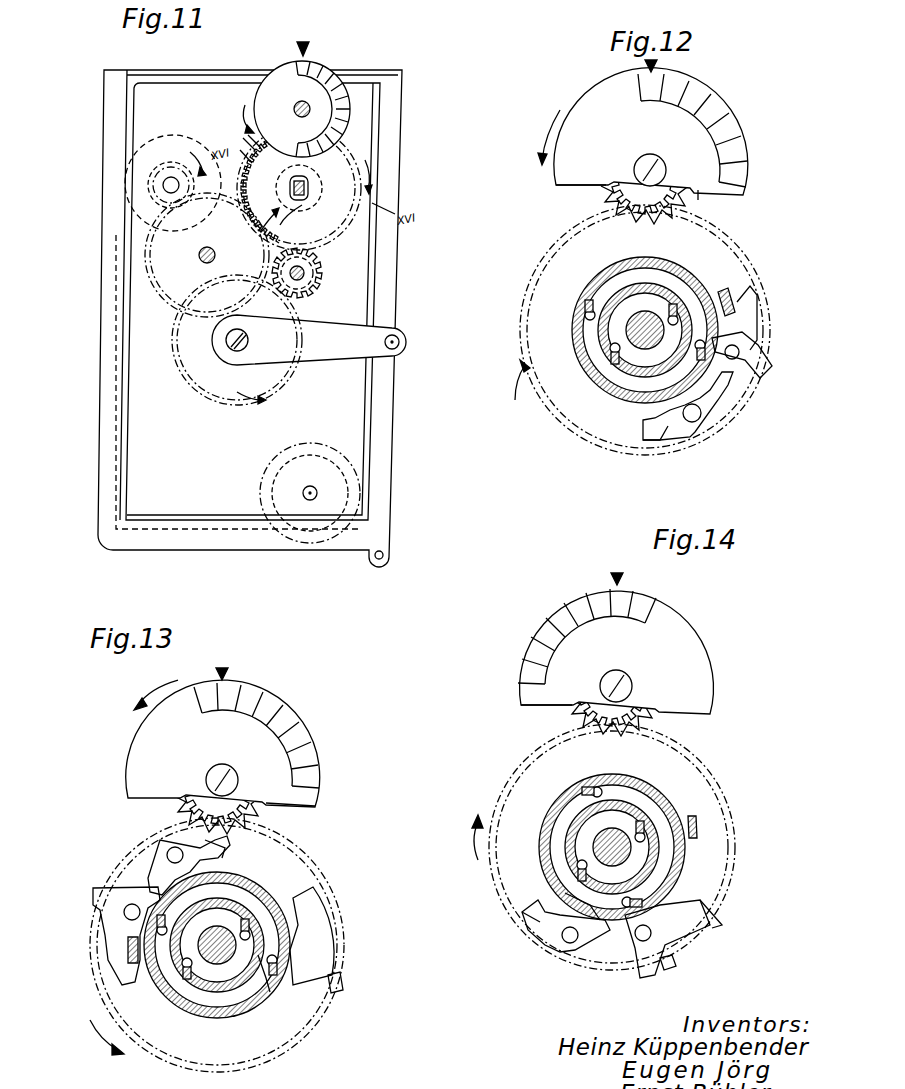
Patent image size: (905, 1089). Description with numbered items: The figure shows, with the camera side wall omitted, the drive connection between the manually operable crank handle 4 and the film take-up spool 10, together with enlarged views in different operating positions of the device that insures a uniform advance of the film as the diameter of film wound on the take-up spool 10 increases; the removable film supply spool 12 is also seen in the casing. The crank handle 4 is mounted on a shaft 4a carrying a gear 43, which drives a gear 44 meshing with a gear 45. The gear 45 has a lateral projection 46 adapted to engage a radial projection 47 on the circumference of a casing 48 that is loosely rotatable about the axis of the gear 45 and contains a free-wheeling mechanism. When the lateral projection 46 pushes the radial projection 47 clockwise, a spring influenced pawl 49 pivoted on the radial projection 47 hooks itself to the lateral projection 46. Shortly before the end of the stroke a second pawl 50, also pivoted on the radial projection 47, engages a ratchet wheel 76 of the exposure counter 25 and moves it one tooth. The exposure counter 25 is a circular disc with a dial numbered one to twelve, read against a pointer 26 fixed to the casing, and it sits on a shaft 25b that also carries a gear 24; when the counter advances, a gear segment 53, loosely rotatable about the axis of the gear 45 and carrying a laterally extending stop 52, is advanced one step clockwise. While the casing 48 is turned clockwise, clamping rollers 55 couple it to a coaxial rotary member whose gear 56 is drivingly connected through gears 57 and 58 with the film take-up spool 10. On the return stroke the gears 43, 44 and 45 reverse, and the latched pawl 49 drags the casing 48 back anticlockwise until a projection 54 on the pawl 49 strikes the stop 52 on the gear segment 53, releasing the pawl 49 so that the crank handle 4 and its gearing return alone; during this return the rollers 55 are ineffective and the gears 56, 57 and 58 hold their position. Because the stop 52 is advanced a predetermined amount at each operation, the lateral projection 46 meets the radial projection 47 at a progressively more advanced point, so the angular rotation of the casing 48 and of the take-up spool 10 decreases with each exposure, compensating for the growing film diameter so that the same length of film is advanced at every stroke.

In FIG. 11, the crank handle 4 is at (325, 352).
In FIG. 11, the shaft 4a is at (228, 337).
In FIG. 11, the film take-up spool 10 is at (163, 160).
In FIG. 11, the film supply spool 12 is at (312, 544).
In FIG. 12, the gear 24 is at (700, 200).
In FIG. 13, the gear 24 is at (190, 806).
In FIG. 14, the gear 24 is at (690, 714).
In FIG. 11, the exposure counter 25 is at (272, 72).
In FIG. 12, the exposure counter 25 is at (605, 100).
In FIG. 13, the exposure counter 25 is at (158, 726).
In FIG. 14, the exposure counter 25 is at (684, 644).
In FIG. 11, the shaft of the exposure counter 25b is at (294, 109).
In FIG. 12, the shaft of the exposure counter 25b is at (636, 165).
In FIG. 13, the shaft of the exposure counter 25b is at (210, 782).
In FIG. 14, the shaft of the exposure counter 25b is at (612, 671).
In FIG. 11, the pointer 26 is at (306, 46).
In FIG. 12, the pointer 26 is at (658, 63).
In FIG. 13, the pointer 26 is at (229, 671).
In FIG. 14, the pointer 26 is at (625, 576).
In FIG. 11, the gear 43 is at (186, 396).
In FIG. 11, the gear 44 is at (323, 280).
In FIG. 11, the gear 45 is at (352, 166).
In FIG. 12, the gear 45 is at (524, 311).
In FIG. 12, the lateral projection 46 is at (732, 300).
In FIG. 13, the lateral projection 46 is at (125, 955).
In FIG. 14, the lateral projection 46 is at (700, 823).
In FIG. 12, the radial projection 47 is at (720, 410).
In FIG. 13, the radial projection 47 is at (142, 870).
In FIG. 14, the radial projection 47 is at (590, 955).
In FIG. 12, the casing 48 is at (606, 386).
In FIG. 13, the casing 48 is at (160, 902).
In FIG. 14, the casing 48 is at (690, 849).
In FIG. 12, the pawl 49 is at (742, 380).
In FIG. 13, the pawl 49 is at (116, 928).
In FIG. 14, the pawl 49 is at (638, 950).
In FIG. 12, the second pawl 50 is at (668, 438).
In FIG. 13, the second pawl 50 is at (224, 856).
In FIG. 14, the second pawl 50 is at (541, 912).
In FIG. 12, the stop 52 is at (762, 351).
In FIG. 13, the stop 52 is at (344, 989).
In FIG. 14, the stop 52 is at (678, 964).
In FIG. 13, the gear segment 53 is at (318, 921).
In FIG. 14, the gear segment 53 is at (499, 785).
In FIG. 12, the projection 54 is at (773, 376).
In FIG. 13, the projection 54 is at (93, 893).
In FIG. 14, the projection 54 is at (646, 978).
In FIG. 13, the clamping rollers 55 is at (270, 994).
In FIG. 14, the clamping rollers 55 is at (562, 892).
In FIG. 11, the gear 56 is at (250, 146).
In FIG. 11, the gear 57 is at (172, 303).
In FIG. 11, the gear 58 is at (178, 160).
In FIG. 12, the ratchet wheel 76 is at (612, 193).
In FIG. 13, the ratchet wheel 76 is at (262, 820).
In FIG. 14, the ratchet wheel 76 is at (577, 714).